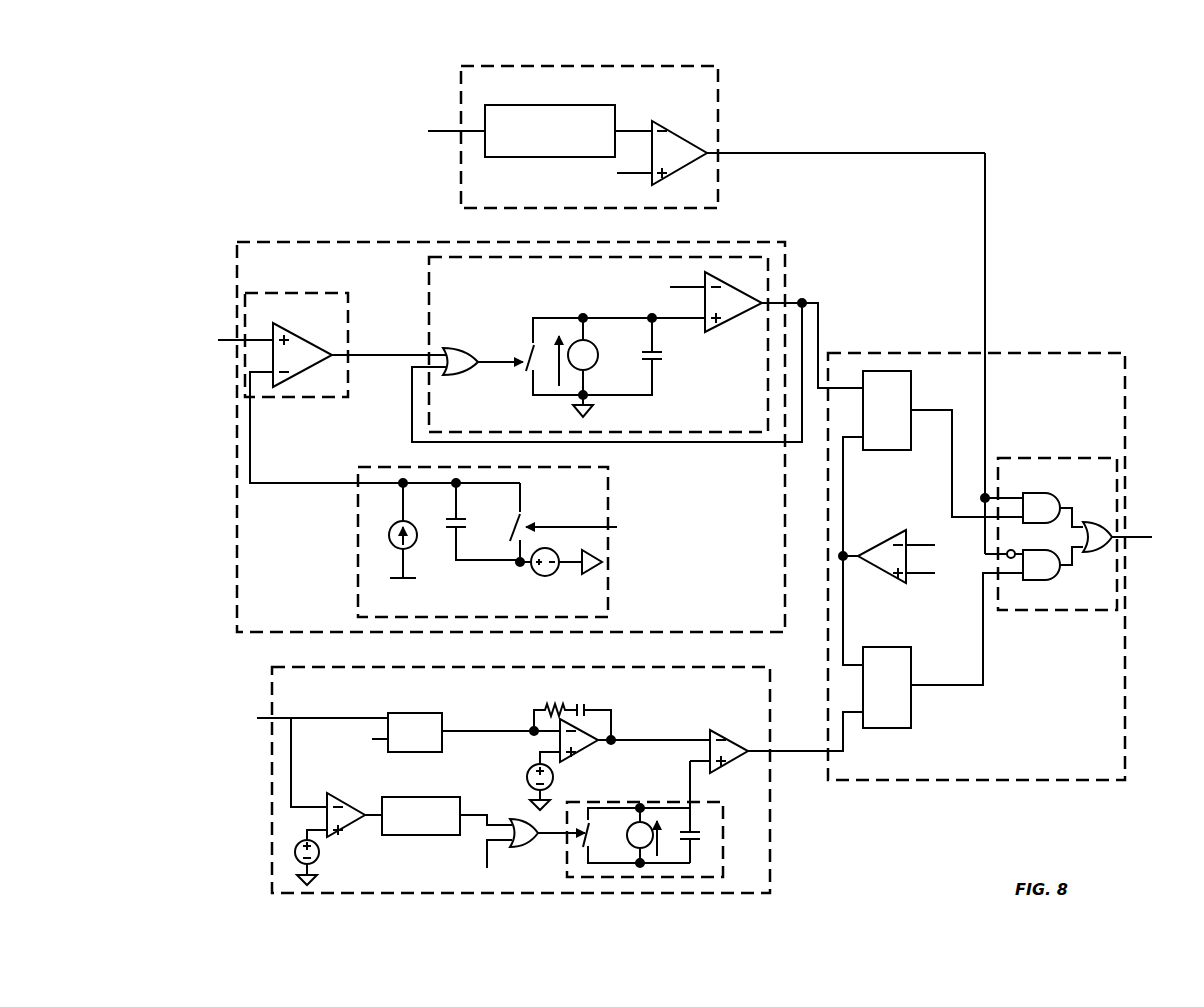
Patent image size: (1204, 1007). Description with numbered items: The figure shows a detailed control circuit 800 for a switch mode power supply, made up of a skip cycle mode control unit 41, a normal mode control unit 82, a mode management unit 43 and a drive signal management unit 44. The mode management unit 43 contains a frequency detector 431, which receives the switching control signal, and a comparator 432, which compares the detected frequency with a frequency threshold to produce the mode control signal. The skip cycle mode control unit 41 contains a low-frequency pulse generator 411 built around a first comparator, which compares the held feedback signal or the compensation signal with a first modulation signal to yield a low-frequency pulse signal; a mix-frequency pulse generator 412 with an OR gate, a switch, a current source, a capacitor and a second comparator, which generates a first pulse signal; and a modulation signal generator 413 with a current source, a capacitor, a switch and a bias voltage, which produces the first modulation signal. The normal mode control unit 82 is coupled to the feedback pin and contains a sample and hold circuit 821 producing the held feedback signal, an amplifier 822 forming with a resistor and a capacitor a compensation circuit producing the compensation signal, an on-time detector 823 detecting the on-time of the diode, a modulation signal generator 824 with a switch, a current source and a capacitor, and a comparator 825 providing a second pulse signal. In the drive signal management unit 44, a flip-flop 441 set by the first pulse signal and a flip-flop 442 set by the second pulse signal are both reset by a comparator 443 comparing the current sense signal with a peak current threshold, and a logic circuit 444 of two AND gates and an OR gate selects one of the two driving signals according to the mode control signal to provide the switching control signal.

The control circuit 800 is at (668, 469).
The mode management unit 43 is at (718, 100).
The frequency detector 431 is at (508, 105).
The comparator 432 is at (660, 122).
The skip cycle mode control unit 41 is at (785, 240).
The low-frequency pulse generator 411 is at (292, 293).
The mix-frequency pulse generator 412 is at (429, 282).
The modulation signal generator 413 is at (358, 473).
The drive signal management unit 44 is at (1035, 353).
The flip-flop 441 is at (880, 450).
The flip-flop 442 is at (911, 728).
The comparator 443 is at (906, 583).
The logic circuit 444 is at (1015, 458).
The normal mode control unit 82 is at (770, 820).
The sample and hold circuit 821 is at (412, 702).
The amplifier 822 is at (575, 762).
The on-time detector 823 is at (400, 835).
The modulation signal generator 824 is at (739, 827).
The comparator 825 is at (728, 773).